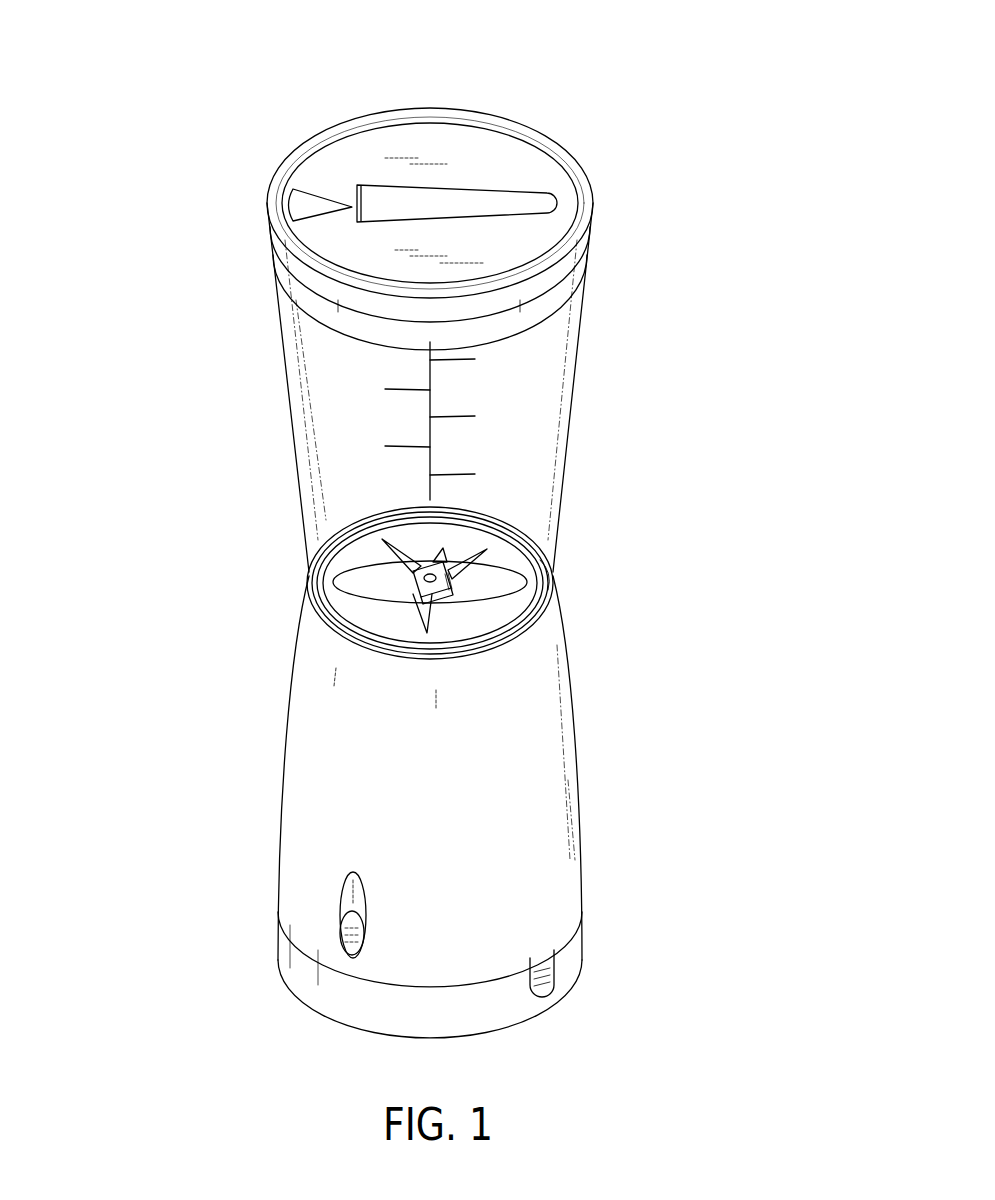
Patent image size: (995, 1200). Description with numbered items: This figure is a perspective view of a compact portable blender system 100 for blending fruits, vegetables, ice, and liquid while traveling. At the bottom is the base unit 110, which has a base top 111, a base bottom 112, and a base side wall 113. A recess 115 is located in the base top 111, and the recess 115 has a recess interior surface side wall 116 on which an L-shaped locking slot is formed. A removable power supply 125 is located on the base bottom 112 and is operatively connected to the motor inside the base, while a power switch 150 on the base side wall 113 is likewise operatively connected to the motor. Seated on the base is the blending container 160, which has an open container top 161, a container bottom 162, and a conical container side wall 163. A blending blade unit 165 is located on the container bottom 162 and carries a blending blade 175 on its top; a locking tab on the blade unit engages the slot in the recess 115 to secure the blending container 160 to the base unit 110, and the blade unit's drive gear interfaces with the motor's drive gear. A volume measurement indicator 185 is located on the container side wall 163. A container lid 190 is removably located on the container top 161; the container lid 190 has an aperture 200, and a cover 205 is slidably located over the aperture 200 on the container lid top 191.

The compact portable blender system 100 is at (160, 112).
The base unit 110 is at (281, 681).
The base top 111 is at (553, 613).
The base bottom 112 is at (580, 925).
The base side wall 113 is at (318, 812).
The recess 115 is at (385, 614).
The recess interior surface side wall 116 is at (506, 560).
The removable power supply 125 is at (497, 1005).
The power switch 150 is at (345, 900).
The blending container 160 is at (272, 352).
The container top 161 is at (552, 330).
The container bottom 162 is at (548, 572).
The conical container side wall 163 is at (530, 414).
The blending blade unit 165 is at (466, 603).
The blending blade 175 is at (412, 584).
The volume measurement indicator 185 is at (392, 450).
The container lid 190 is at (541, 123).
The container lid top 191 is at (545, 172).
The aperture 200 is at (308, 200).
The cover 205 is at (460, 205).